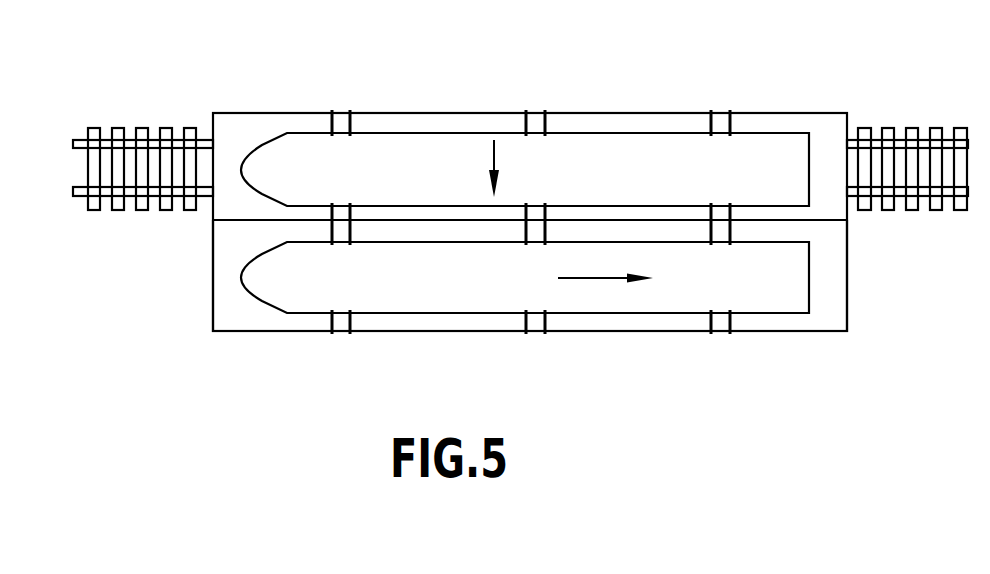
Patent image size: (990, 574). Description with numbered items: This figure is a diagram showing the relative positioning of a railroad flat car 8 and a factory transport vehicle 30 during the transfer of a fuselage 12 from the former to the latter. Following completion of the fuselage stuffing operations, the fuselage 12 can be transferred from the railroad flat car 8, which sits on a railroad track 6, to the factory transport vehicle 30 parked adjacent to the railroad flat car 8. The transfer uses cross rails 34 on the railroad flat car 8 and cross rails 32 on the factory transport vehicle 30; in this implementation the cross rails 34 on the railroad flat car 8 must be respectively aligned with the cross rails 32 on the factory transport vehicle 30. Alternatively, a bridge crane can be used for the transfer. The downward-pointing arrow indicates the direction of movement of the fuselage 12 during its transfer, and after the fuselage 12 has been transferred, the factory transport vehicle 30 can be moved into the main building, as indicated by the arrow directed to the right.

The railroad track 6 is at (141, 128).
The railroad flat car 8 is at (805, 112).
The fuselage 12 is at (641, 133).
The factory transport vehicle 30 is at (817, 331).
The cross rails 32 is at (710, 321).
The cross rails 34 is at (352, 126).